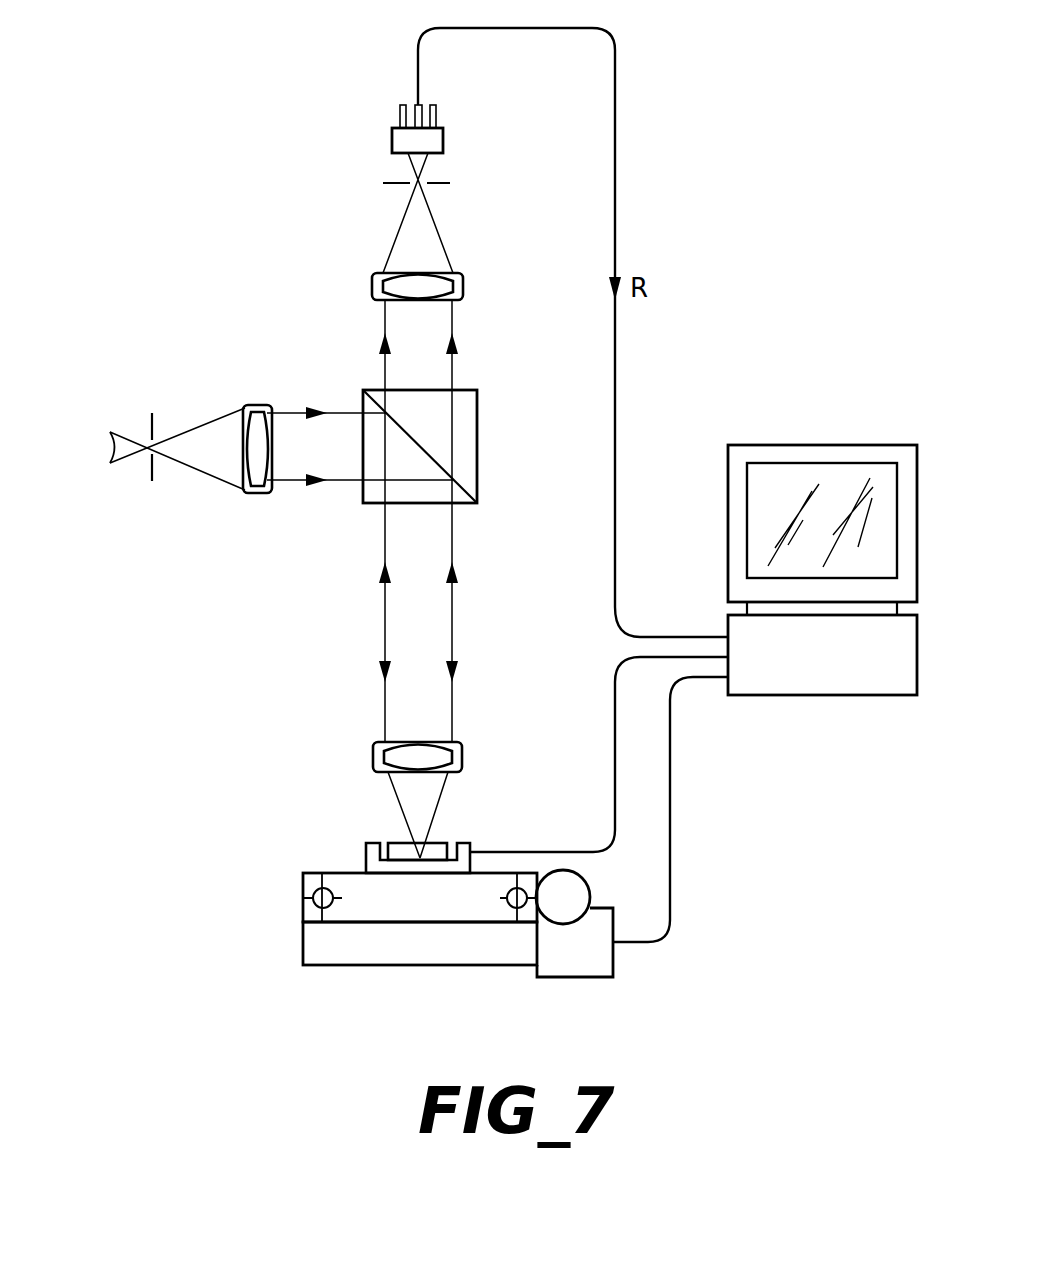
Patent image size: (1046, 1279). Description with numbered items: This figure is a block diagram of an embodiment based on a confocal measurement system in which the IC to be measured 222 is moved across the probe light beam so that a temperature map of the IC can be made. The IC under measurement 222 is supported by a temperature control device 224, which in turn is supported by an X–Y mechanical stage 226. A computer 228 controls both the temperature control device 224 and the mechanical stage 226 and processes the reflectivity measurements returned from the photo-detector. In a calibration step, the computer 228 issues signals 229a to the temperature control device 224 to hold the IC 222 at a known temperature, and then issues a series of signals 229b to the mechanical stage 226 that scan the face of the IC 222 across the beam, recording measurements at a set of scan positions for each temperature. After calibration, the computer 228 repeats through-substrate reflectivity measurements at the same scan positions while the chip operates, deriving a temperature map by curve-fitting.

The IC under measurement 222 is at (440, 843).
The temperature control device 224 is at (365, 858).
The X–Y mechanical stage 226 is at (425, 937).
The computer 228 is at (797, 695).
The signals to temperature control device 229a is at (613, 715).
The signals to mechanical stage 229b is at (658, 947).